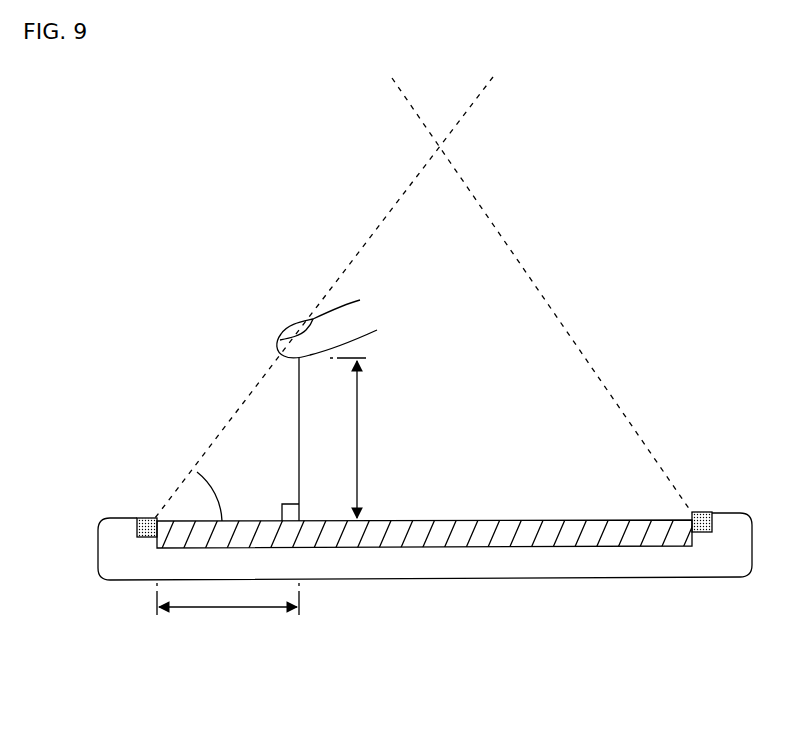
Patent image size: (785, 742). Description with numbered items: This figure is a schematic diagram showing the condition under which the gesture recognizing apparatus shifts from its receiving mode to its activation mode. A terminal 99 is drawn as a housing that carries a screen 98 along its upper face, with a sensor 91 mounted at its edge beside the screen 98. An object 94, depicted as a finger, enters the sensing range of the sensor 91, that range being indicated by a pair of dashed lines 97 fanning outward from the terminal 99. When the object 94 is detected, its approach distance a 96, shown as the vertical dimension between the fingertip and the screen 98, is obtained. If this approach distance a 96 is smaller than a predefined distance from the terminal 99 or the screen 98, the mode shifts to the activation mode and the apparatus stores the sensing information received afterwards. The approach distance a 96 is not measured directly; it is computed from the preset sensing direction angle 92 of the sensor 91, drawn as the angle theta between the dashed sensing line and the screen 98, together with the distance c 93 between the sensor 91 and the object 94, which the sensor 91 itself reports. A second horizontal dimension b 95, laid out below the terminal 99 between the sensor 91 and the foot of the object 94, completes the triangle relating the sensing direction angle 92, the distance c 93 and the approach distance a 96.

The sensor 91 is at (148, 518).
The sensing direction angle 92 is at (233, 483).
The distance c 93 is at (208, 380).
The object 94 is at (300, 323).
The distance b 95 is at (236, 634).
The approach distance a 96 is at (383, 442).
The sensing line 97 is at (390, 213).
The screen 98 is at (493, 548).
The terminal 99 is at (617, 577).